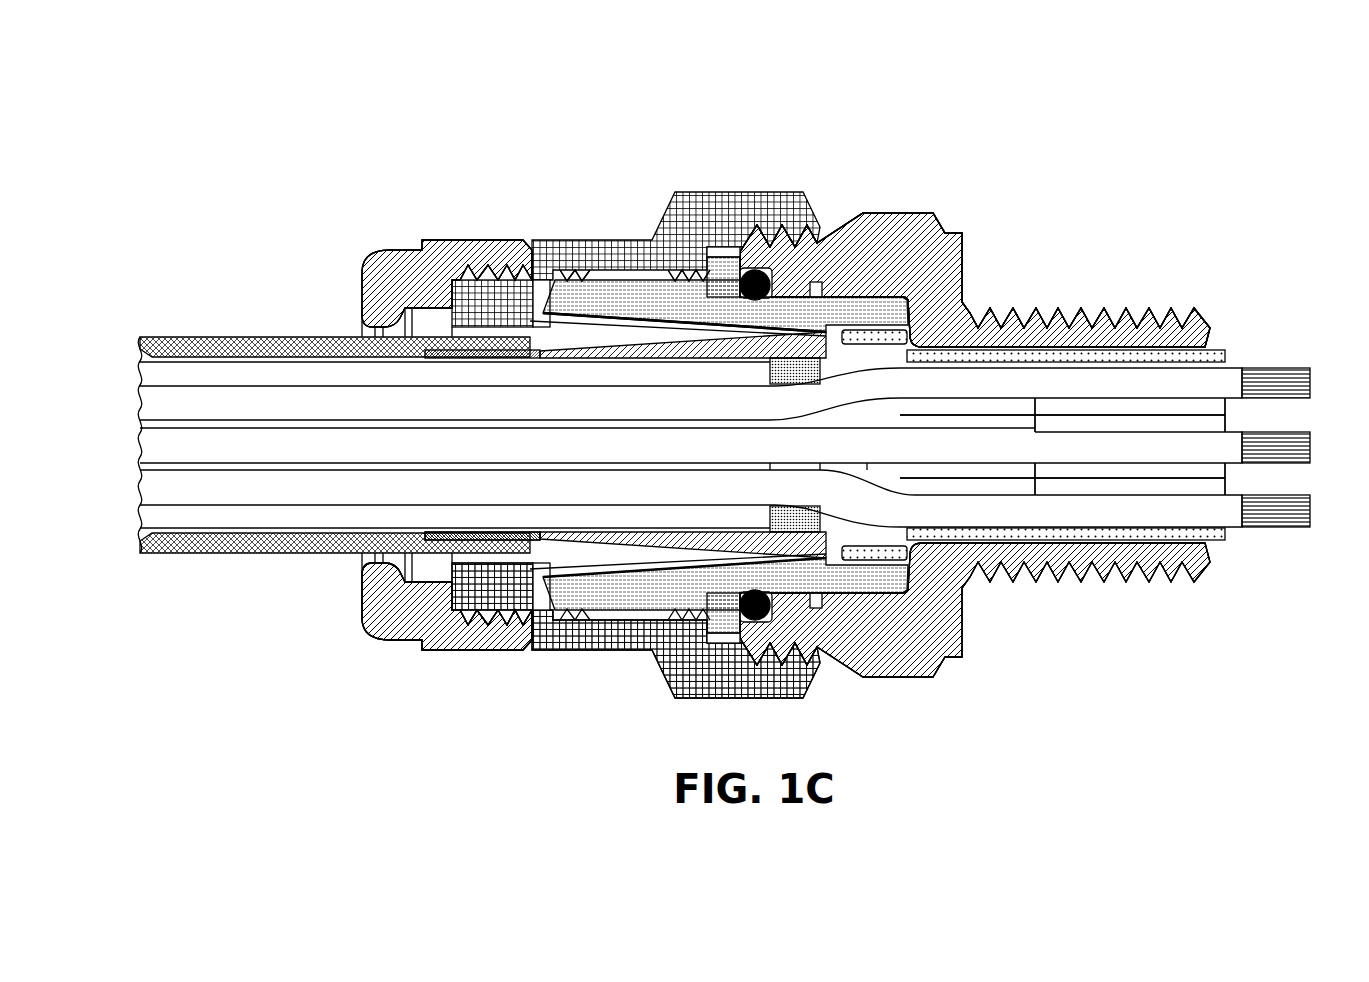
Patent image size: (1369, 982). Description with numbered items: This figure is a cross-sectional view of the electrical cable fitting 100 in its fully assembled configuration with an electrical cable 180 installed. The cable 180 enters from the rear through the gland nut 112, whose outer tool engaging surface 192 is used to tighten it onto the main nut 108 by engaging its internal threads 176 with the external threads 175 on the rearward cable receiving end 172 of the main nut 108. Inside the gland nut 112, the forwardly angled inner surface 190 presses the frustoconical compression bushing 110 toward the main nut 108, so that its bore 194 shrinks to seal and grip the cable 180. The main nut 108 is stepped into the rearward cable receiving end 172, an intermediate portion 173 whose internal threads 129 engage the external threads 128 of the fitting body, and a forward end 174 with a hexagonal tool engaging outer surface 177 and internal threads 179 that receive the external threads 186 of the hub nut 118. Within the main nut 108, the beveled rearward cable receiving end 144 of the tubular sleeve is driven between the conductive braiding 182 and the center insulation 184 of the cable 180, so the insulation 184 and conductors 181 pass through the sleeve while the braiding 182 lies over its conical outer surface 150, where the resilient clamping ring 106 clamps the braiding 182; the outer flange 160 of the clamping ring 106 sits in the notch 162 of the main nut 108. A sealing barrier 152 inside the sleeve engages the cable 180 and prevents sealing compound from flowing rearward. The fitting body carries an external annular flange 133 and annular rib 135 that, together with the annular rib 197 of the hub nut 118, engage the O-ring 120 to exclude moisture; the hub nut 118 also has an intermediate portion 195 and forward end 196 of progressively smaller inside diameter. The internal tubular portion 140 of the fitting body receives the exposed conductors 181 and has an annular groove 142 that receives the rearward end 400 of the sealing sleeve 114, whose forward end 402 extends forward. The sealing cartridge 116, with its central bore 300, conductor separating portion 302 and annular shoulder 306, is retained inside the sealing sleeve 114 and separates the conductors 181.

The electrical cable fitting 100 is at (350, 138).
The clamping ring 106 is at (608, 326).
The main nut 108 is at (633, 222).
The compression bushing 110 is at (437, 612).
The gland nut 112 is at (372, 662).
The sealing sleeve 114 is at (923, 540).
The sealing cartridge 116 is at (1048, 410).
The hub nut 118 is at (1063, 292).
The O-ring 120 is at (755, 590).
The external threads 128 is at (575, 607).
The internal threads 129 is at (686, 280).
The external annular flange 133 is at (717, 627).
The annular rib 135 is at (790, 296).
The internal tubular portion 140 is at (840, 347).
The annular groove 142 is at (860, 551).
The rearward cable receiving end 144 is at (275, 545).
The conical outer surface 150 is at (712, 532).
The sealing barrier 152 is at (787, 513).
The outer flange 160 is at (541, 316).
The notch 162 is at (542, 314).
The rearward cable receiving end 172 is at (497, 612).
The intermediate portion 173 is at (558, 639).
The forward end 174 is at (808, 697).
The external threads 175 is at (488, 281).
The internal threads 176 is at (540, 280).
The tool engaging outer surface 177 is at (740, 682).
The internal threads 179 is at (795, 233).
The electrical cable 180 is at (187, 500).
The exposed conductors 181 is at (1222, 513).
The conductive braiding 182 is at (630, 532).
The center insulation 184 is at (513, 513).
The external threads 186 is at (792, 283).
The forwardly angled inner surface 190 is at (431, 280).
The outer tool engaging surface 192 is at (503, 240).
The bore 194 is at (377, 612).
The intermediate portion 195 is at (913, 692).
The forward end 196 is at (1032, 595).
The annular rib 197 is at (860, 213).
The central bore 300 is at (1122, 470).
The conductor separating portion 302 is at (988, 407).
The annular shoulder 306 is at (888, 366).
The rearward end 400 is at (902, 518).
The forward end 402 is at (1070, 542).